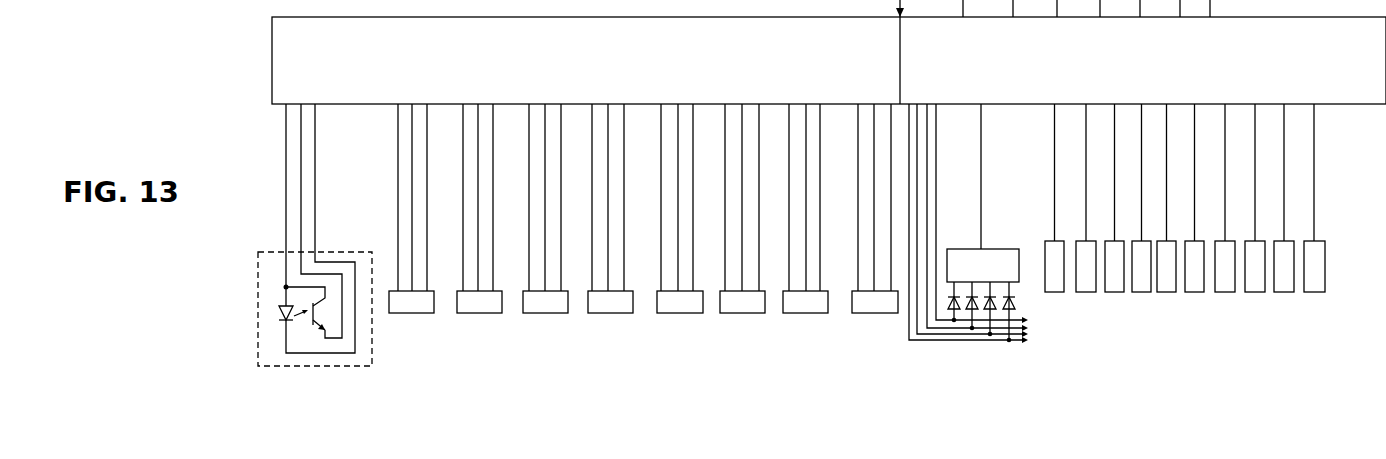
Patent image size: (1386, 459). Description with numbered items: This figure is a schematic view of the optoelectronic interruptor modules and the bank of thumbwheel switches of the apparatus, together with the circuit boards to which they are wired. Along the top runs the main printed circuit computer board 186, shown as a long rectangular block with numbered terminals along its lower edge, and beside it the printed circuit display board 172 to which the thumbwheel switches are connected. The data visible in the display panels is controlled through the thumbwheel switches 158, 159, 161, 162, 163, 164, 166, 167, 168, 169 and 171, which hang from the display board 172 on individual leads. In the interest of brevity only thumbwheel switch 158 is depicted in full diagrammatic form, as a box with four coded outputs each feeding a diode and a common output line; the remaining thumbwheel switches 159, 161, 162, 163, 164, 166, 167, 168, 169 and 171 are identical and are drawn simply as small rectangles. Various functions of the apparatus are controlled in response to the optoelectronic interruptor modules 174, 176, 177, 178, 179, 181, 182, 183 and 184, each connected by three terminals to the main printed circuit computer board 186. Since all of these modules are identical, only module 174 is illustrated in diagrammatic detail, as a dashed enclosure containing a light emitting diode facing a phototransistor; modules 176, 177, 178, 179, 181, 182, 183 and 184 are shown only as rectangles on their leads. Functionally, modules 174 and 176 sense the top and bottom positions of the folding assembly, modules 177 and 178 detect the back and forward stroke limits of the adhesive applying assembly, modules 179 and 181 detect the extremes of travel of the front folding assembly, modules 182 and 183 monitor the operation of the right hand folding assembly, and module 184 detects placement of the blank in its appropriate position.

The thumbwheel switch 158 is at (993, 258).
The thumbwheel switch 159 is at (1053, 285).
The thumbwheel switch 161 is at (1088, 249).
The thumbwheel switch 162 is at (1112, 283).
The thumbwheel switch 163 is at (1143, 249).
The thumbwheel switch 164 is at (1167, 283).
The thumbwheel switch 166 is at (1197, 249).
The thumbwheel switch 167 is at (1225, 283).
The thumbwheel switch 168 is at (1253, 252).
The thumbwheel switch 169 is at (1287, 281).
The switch 171 is at (1316, 251).
The printed circuit display board 172 is at (1331, 33).
The optoelectronic interruptor module 174 is at (342, 258).
The optoelectronic interruptor module 176 is at (413, 313).
The optoelectronic interruptor module 177 is at (481, 313).
The optoelectronic interruptor module 178 is at (547, 313).
The optoelectronic interruptor module 179 is at (612, 313).
The optoelectronic interruptor module 181 is at (681, 313).
The optoelectronic interruptor module 182 is at (744, 313).
The optoelectronic interruptor module 183 is at (807, 313).
The optoelectronic interruptor module 184 is at (873, 313).
The main printed circuit computer board 186 is at (297, 45).